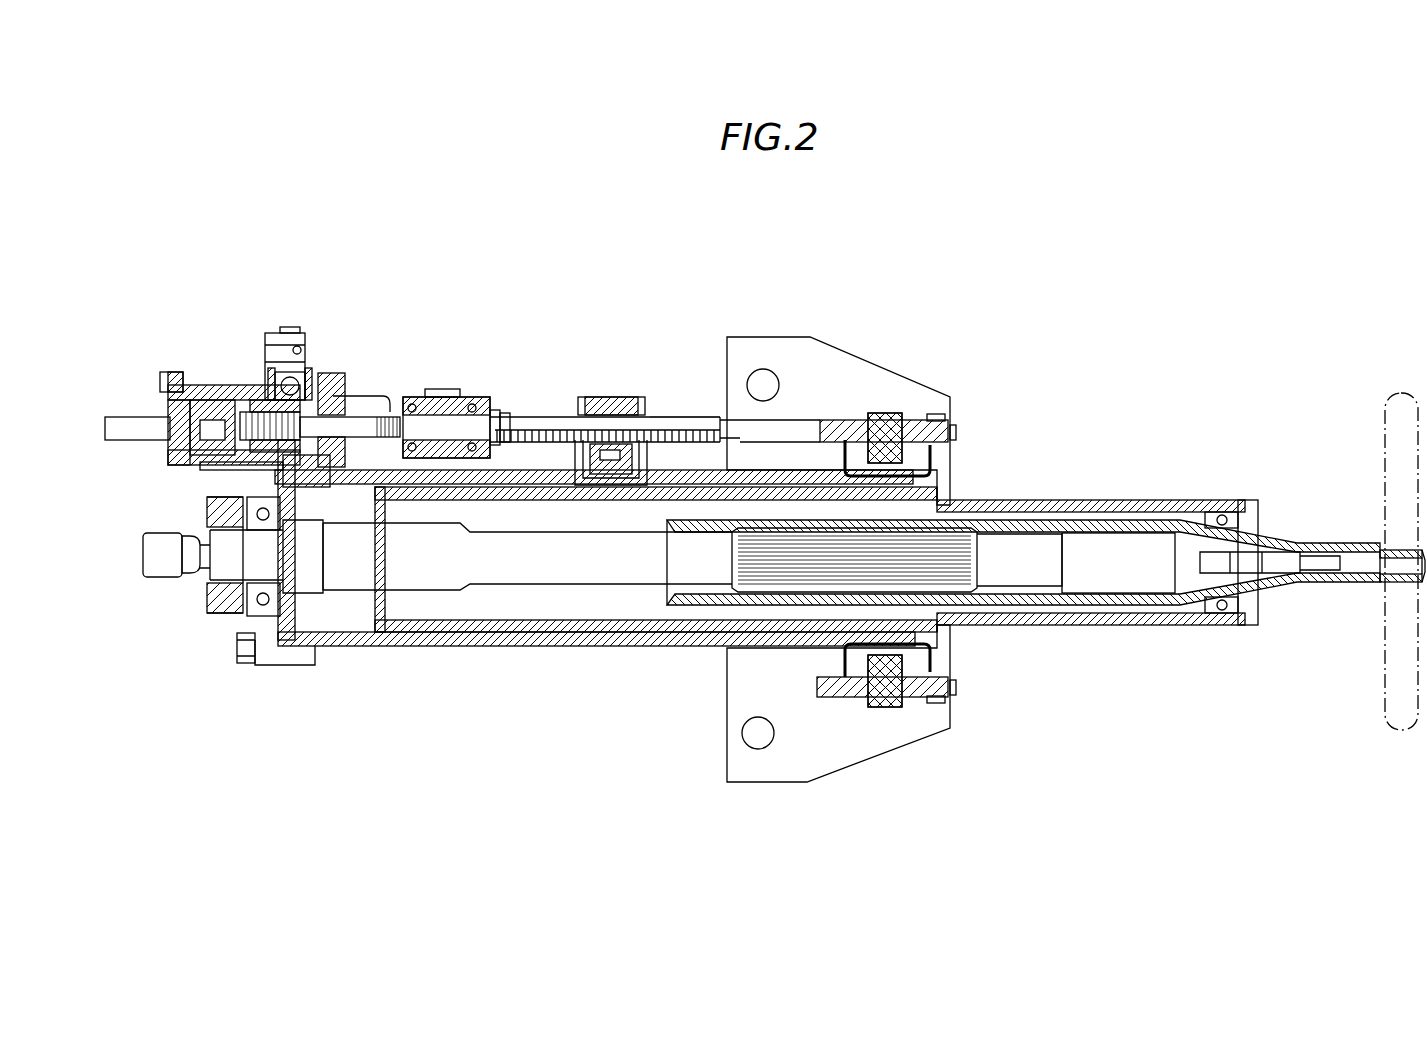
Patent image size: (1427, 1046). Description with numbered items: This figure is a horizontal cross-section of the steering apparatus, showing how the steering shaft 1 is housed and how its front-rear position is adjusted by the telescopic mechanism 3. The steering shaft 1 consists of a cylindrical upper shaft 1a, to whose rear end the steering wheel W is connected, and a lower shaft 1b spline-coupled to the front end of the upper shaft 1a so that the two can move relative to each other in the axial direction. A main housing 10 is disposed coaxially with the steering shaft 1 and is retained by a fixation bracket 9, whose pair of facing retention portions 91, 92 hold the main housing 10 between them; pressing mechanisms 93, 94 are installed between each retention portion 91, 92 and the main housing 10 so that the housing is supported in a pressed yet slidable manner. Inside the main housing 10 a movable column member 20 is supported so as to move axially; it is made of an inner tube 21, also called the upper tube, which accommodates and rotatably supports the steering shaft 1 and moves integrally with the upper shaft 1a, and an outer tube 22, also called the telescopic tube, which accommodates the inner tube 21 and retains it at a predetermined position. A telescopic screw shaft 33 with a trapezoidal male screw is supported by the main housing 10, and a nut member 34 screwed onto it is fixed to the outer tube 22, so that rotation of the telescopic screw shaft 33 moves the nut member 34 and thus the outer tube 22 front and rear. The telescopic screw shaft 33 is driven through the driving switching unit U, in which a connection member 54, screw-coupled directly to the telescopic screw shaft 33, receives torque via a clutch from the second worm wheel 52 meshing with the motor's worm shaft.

The steering shaft 1 is at (784, 562).
The upper shaft 1a is at (1305, 590).
The lower shaft 1b is at (166, 575).
The telescopic mechanism 3 is at (611, 396).
The fixation bracket 9 is at (851, 360).
The main housing 10 is at (348, 652).
The movable column member 20 is at (1137, 494).
The inner tube 21 is at (1108, 626).
The outer tube 22 is at (583, 632).
The telescopic screw shaft 33 is at (690, 414).
The nut member 34 is at (607, 396).
The second worm wheel 52 is at (206, 456).
The connection member 54 is at (361, 424).
The retention portion 91 is at (947, 428).
The retention portion 92 is at (946, 691).
The pressing mechanism 93 is at (930, 463).
The pressing mechanism 94 is at (927, 663).
The driving switching unit U is at (240, 374).
The steering wheel W is at (1393, 395).